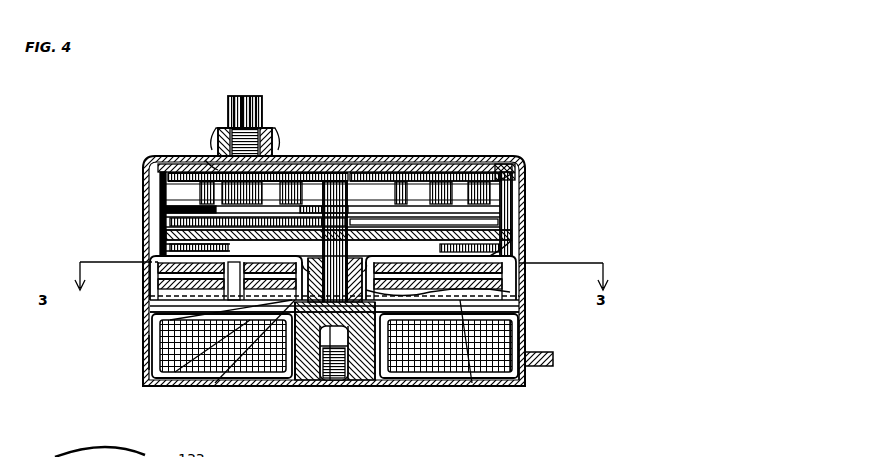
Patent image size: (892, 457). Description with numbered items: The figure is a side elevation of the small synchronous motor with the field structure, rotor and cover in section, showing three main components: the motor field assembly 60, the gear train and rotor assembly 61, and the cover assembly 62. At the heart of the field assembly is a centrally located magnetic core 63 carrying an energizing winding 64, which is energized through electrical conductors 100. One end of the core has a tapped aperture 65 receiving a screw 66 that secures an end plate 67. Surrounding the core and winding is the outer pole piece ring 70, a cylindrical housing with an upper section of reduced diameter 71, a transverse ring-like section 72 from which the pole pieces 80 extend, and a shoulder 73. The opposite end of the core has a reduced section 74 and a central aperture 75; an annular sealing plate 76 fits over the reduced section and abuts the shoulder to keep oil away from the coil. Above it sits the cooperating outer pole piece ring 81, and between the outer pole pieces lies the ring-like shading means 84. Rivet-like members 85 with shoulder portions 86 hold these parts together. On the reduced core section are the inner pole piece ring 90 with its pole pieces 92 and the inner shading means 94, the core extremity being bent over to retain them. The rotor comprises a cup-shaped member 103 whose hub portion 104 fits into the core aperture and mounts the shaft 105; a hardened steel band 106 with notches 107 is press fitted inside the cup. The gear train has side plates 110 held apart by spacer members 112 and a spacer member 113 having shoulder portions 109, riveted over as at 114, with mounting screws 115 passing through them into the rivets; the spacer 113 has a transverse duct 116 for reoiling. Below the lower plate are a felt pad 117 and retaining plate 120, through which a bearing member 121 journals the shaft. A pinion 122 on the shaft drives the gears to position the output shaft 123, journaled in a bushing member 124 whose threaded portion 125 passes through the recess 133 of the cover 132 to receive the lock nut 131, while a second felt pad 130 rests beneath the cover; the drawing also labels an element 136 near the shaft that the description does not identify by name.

The motor field assembly 60 is at (116, 346).
The gear train and rotor assembly 61 is at (410, 285).
The cover assembly 62 is at (525, 128).
The magnetic core 63 is at (376, 383).
The energizing winding 64 is at (428, 383).
The tapped aperture 65 is at (313, 383).
The screw 66 is at (350, 383).
The end plate 67 is at (503, 385).
The outer pole piece ring 70 is at (525, 346).
The upper section of reduced diametrical dimensions 71 is at (148, 276).
The transverse ring-like section 72 is at (148, 268).
The shoulder 73 is at (519, 293).
The reduced diametrical section 74 is at (222, 346).
The aperture 75 is at (335, 341).
The annular disk-like sealing plate 76 is at (148, 312).
The pole pieces 80 is at (466, 247).
The cooperating outer pole piece ring 81 is at (148, 300).
The ring-like shading means 84 is at (148, 286).
The rivet-like members 85 is at (519, 302).
The shoulder portion 86 is at (512, 244).
The inner pole piece ring 90 is at (231, 336).
The pole pieces 92 is at (148, 372).
The inner shading means 94 is at (418, 300).
The electrical conductors 100 is at (538, 366).
The cup-shaped member 103 is at (230, 262).
The hub portion 104 is at (293, 383).
The shaft 105 is at (357, 383).
The hardened steel band 106 is at (148, 356).
The notches 107 is at (215, 386).
The shoulder portions 109 is at (512, 232).
The side plates 110 is at (522, 164).
The spacer members 112 is at (205, 190).
The spacer member 113 is at (515, 190).
The riveted-over portion 114 is at (512, 208).
The mounting screws 115 is at (205, 160).
The transverse duct 116 is at (520, 180).
The felt pad 117 is at (148, 234).
The retaining plate 120 is at (148, 254).
The bearing member 121 is at (385, 262).
The pinion 122 is at (352, 176).
The output shaft or pinion 123 is at (252, 96).
The bushing member 124 is at (282, 196).
The threaded portion 125 is at (268, 130).
The second felt pad 130 is at (410, 164).
The lock nut 131 is at (212, 150).
The cover 132 is at (485, 164).
The recess 133 is at (340, 173).
The shaft 136 is at (300, 178).